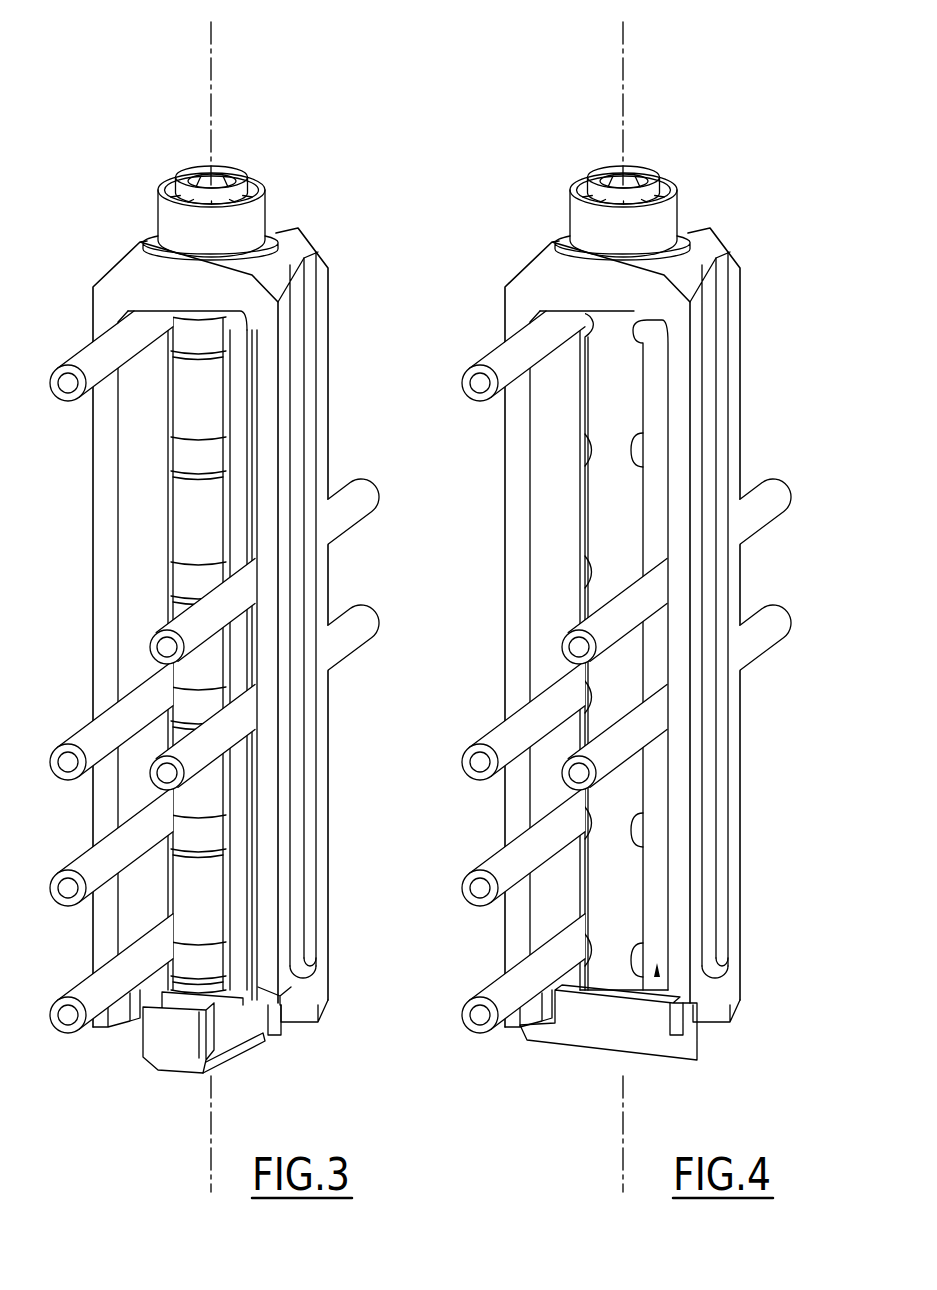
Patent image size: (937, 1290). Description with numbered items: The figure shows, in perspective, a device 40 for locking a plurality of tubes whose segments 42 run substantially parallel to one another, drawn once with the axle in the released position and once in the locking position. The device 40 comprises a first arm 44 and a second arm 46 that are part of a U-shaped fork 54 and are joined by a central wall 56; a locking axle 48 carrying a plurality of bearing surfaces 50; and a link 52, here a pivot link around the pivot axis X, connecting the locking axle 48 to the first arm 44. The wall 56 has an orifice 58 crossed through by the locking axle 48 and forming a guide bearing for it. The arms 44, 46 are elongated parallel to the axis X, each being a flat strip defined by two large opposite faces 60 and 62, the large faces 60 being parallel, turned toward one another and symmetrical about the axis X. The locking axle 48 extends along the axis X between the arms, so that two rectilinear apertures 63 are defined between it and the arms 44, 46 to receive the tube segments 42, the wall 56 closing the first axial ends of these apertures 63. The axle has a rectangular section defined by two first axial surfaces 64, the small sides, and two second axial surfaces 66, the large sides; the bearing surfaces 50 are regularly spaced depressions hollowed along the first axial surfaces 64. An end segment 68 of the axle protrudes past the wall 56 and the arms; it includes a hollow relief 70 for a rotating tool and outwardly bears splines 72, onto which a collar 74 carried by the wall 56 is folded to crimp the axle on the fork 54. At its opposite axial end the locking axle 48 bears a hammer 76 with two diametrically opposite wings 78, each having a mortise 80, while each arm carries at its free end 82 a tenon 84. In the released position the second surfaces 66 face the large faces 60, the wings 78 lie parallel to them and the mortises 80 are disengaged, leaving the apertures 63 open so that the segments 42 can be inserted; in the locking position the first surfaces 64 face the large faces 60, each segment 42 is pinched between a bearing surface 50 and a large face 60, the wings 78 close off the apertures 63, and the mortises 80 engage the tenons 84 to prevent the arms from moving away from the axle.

In FIG. 3, the pivot axis X is at (214, 67).
In FIG. 4, the pivot axis X is at (659, 602).
In FIG. 3, the device 40 is at (377, 287).
In FIG. 4, the device 40 is at (661, 562).
In FIG. 3, the tube segments 42 is at (360, 500).
In FIG. 4, the tube segments 42 is at (597, 713).
In FIG. 3, the first arm 44 is at (310, 377).
In FIG. 4, the first arm 44 is at (752, 601).
In FIG. 3, the second arm 46 is at (105, 570).
In FIG. 4, the second arm 46 is at (492, 842).
In FIG. 3, the locking axle 48 is at (233, 660).
In FIG. 4, the locking axle 48 is at (533, 651).
In FIG. 3, the bearing surfaces 50 is at (197, 453).
In FIG. 4, the bearing surfaces 50 is at (620, 677).
In FIG. 3, the link 52 is at (290, 187).
In FIG. 4, the link 52 is at (678, 154).
In FIG. 3, the U-shaped fork 54 is at (80, 320).
In FIG. 4, the U-shaped fork 54 is at (486, 622).
In FIG. 3, the central wall 56 is at (163, 287).
In FIG. 4, the central wall 56 is at (554, 275).
In FIG. 3, the orifice 58 is at (270, 245).
In FIG. 4, the orifice 58 is at (672, 229).
In FIG. 3, the large faces 60 is at (140, 585).
In FIG. 4, the large faces 60 is at (553, 878).
In FIG. 3, the large faces 62 is at (300, 437).
In FIG. 4, the large faces 62 is at (741, 609).
In FIG. 3, the rectilinear apertures 63 is at (127, 1033).
In FIG. 4, the rectilinear apertures 63 is at (612, 962).
In FIG. 3, the first axial surfaces 64 is at (190, 508).
In FIG. 3, the second axial surfaces 66 is at (233, 503).
In FIG. 4, the second axial surfaces 66 is at (714, 655).
In FIG. 3, the end segment 68 is at (130, 220).
In FIG. 4, the end segment 68 is at (562, 215).
In FIG. 3, the hollow relief 70 is at (222, 173).
In FIG. 4, the hollow relief 70 is at (642, 135).
In FIG. 3, the splines 72 is at (248, 177).
In FIG. 4, the splines 72 is at (657, 151).
In FIG. 3, the collar 74 is at (158, 202).
In FIG. 4, the collar 74 is at (580, 166).
In FIG. 3, the hammer 76 is at (140, 1085).
In FIG. 4, the hammer 76 is at (579, 1114).
In FIG. 3, the wings 78 is at (190, 1042).
In FIG. 4, the wings 78 is at (608, 1052).
In FIG. 3, the mortise 80 is at (232, 1058).
In FIG. 3, the free end 82 is at (313, 970).
In FIG. 4, the free end 82 is at (749, 921).
In FIG. 3, the tenon 84 is at (288, 1022).